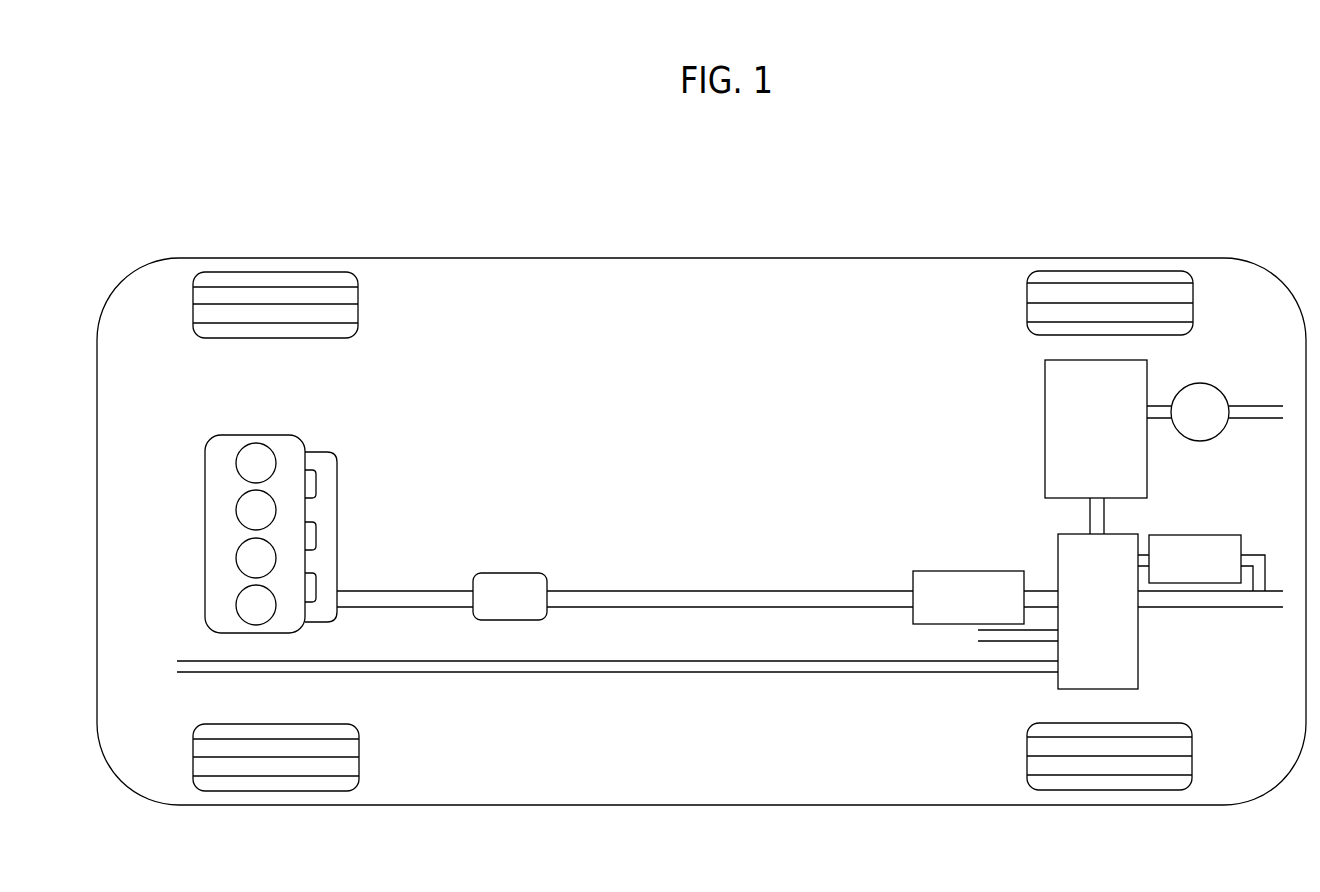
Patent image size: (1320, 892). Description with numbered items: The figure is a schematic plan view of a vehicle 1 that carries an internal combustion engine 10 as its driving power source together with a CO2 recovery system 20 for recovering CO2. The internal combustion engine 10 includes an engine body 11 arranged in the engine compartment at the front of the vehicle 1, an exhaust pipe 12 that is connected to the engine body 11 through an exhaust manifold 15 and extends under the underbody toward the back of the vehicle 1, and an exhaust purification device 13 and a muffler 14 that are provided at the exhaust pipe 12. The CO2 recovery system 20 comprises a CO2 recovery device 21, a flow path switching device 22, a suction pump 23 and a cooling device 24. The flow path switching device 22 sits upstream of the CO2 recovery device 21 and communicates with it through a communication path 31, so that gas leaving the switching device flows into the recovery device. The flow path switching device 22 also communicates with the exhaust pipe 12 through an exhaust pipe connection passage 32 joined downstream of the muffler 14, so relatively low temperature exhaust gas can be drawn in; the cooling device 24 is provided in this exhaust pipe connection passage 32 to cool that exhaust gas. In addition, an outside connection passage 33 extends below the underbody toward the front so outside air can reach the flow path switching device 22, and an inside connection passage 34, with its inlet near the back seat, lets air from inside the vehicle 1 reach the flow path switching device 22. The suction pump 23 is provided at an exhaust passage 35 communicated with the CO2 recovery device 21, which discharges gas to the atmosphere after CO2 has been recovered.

The vehicle 1 is at (638, 258).
The internal combustion engine 10 is at (322, 502).
The engine body 11 is at (268, 436).
The exhaust pipe 12 is at (410, 590).
The exhaust purification device 13 is at (507, 573).
The muffler 14 is at (956, 571).
The exhaust manifold 15 is at (332, 455).
The CO2 recovery system 20 is at (1073, 496).
The CO2 recovery device 21 is at (1045, 400).
The flow path switching device 22 is at (1140, 640).
The suction pump 23 is at (1208, 383).
The cooling device 24 is at (1195, 535).
The communication path 31 is at (1089, 521).
The exhaust pipe connection passage 32 is at (1262, 554).
The outside connection passage 33 is at (768, 673).
The inside connection passage 34 is at (1000, 645).
The exhaust passage 35 is at (1245, 405).